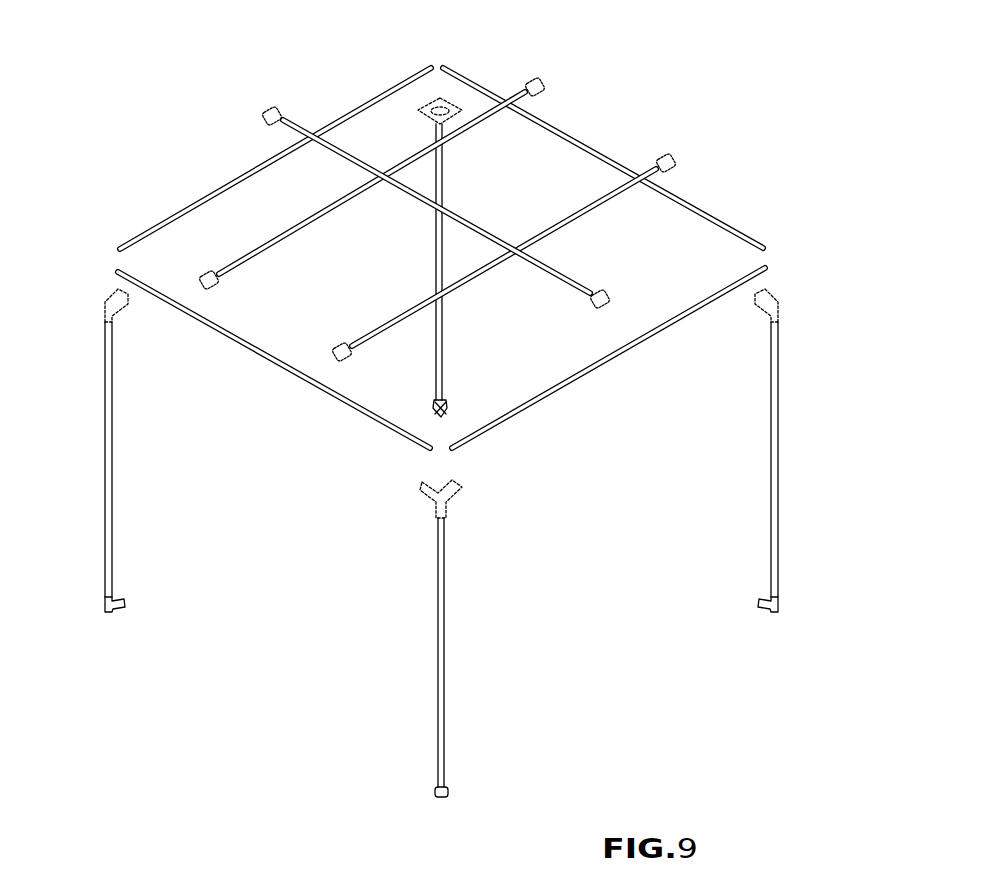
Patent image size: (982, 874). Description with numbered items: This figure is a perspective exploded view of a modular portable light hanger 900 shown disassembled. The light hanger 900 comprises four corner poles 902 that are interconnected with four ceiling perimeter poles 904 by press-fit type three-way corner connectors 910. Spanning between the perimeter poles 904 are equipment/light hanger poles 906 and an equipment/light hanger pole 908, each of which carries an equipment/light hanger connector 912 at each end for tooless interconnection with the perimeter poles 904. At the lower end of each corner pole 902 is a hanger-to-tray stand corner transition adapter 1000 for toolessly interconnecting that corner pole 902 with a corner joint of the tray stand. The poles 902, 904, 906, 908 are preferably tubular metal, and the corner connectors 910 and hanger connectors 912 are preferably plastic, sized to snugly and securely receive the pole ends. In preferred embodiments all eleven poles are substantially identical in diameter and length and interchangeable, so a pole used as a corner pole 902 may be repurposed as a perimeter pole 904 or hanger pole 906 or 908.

The modular portable light hanger 900 is at (170, 152).
The corner pole 902 is at (446, 184).
The perimeter pole 904 is at (246, 180).
The equipment/light hanger pole 906 is at (319, 215).
The equipment/light hanger pole 908 is at (534, 265).
The 3-way corner connector 910 is at (451, 101).
The equipment/light hanger connector 912 is at (272, 107).
The hanger-to-tray stand corner transition adapter 1000 is at (450, 407).